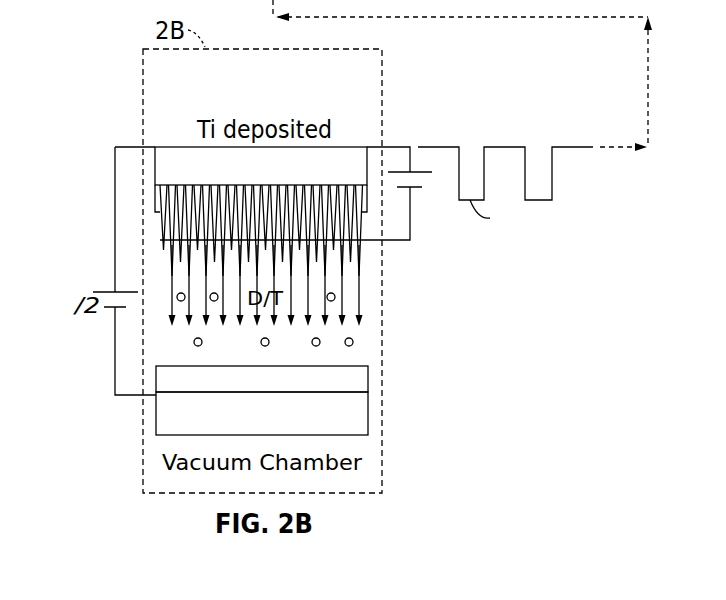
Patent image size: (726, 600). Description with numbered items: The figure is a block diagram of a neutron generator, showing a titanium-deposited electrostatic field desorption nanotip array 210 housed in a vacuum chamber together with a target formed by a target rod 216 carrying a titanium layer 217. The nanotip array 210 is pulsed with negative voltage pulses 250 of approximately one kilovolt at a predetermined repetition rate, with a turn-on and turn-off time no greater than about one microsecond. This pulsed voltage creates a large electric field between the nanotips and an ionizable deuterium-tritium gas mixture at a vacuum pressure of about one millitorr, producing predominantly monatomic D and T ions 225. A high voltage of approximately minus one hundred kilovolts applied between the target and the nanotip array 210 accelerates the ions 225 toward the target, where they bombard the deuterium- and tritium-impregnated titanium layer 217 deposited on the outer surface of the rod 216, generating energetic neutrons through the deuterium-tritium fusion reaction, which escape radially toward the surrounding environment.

The electrostatic field desorption nanotip array 210 is at (362, 258).
The monatomic D and T ions 225 is at (353, 343).
The titanium layer 217 is at (368, 380).
The target rod 216 is at (355, 415).
The negative voltage V1 pulses 250 is at (507, 147).